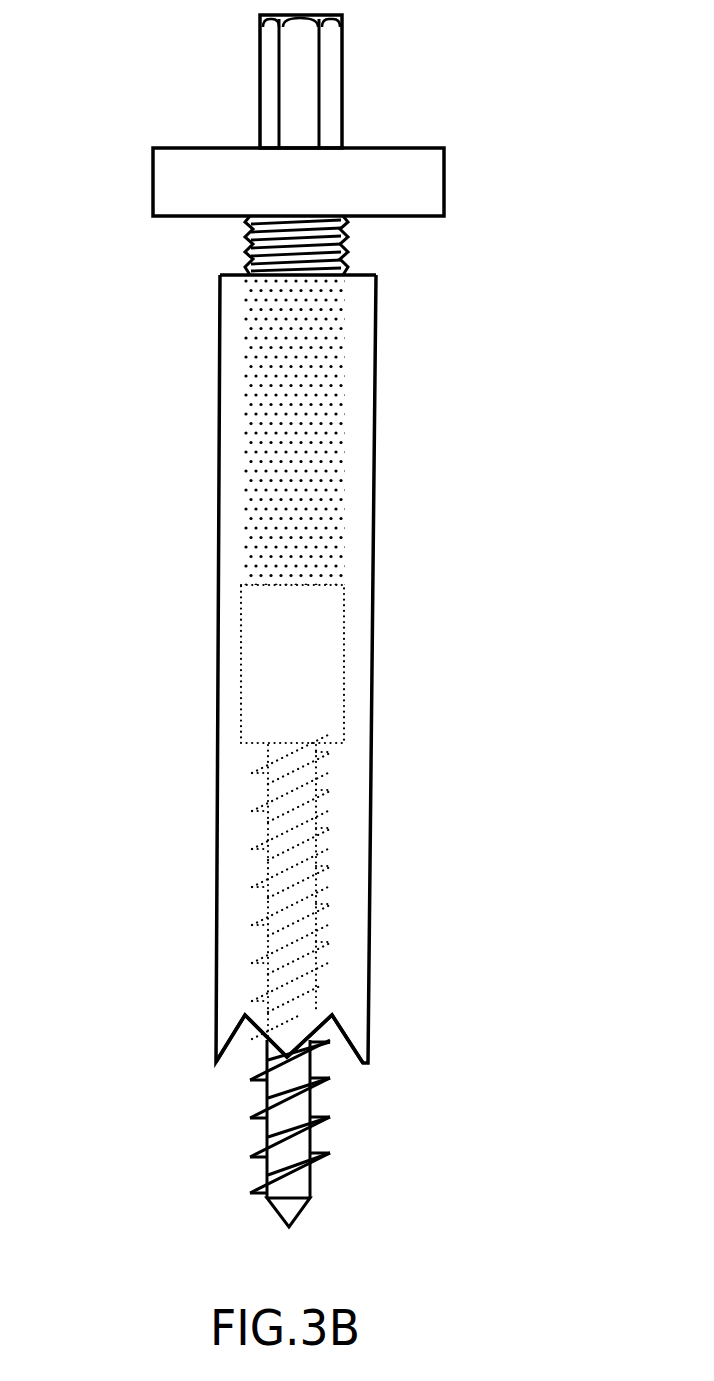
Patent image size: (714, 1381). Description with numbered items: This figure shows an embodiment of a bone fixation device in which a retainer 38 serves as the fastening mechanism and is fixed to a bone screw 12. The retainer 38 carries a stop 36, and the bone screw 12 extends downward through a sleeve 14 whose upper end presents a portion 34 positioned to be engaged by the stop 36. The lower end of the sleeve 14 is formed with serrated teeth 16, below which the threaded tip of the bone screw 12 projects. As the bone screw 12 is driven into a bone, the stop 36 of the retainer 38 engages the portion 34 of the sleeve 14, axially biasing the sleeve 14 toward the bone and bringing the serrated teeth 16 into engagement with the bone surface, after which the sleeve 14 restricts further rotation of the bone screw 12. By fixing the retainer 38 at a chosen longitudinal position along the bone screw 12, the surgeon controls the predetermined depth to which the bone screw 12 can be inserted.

The bone screw 12 is at (322, 1220).
The sleeve 14 is at (385, 972).
The serrated teeth 16 is at (345, 1075).
The portion of the sleeve 34 is at (198, 278).
The stop 36 is at (424, 236).
The retainer 38 is at (462, 184).